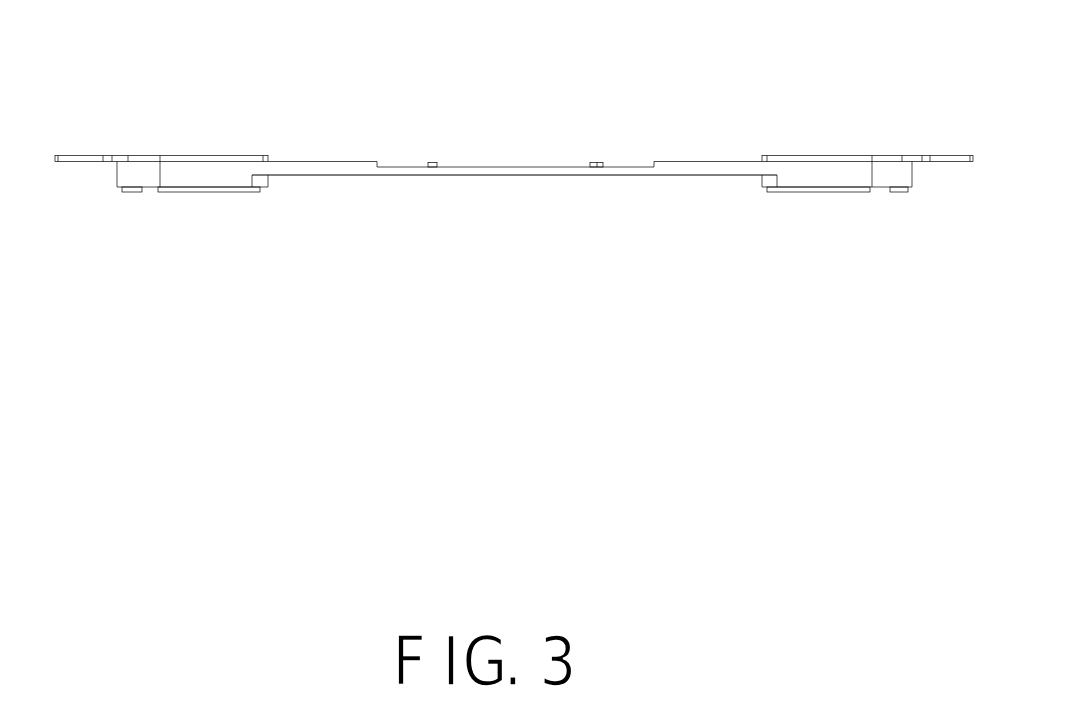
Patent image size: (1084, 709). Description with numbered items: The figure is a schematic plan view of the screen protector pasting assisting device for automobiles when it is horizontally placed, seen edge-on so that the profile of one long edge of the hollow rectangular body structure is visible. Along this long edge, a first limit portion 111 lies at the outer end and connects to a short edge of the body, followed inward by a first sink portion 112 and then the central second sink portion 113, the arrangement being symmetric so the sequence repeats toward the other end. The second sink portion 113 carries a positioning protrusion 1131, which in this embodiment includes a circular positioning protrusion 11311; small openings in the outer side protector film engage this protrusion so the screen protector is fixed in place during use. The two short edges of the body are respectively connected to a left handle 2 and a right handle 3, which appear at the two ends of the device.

The left handle 2 is at (161, 92).
The right handle 3 is at (867, 109).
The first limit portion 111 is at (199, 107).
The first sink portion 112 is at (469, 219).
The second sink portion 113 is at (514, 222).
The positioning protrusion 1131 is at (481, 97).
The circular positioning protrusion 11311 is at (690, 97).